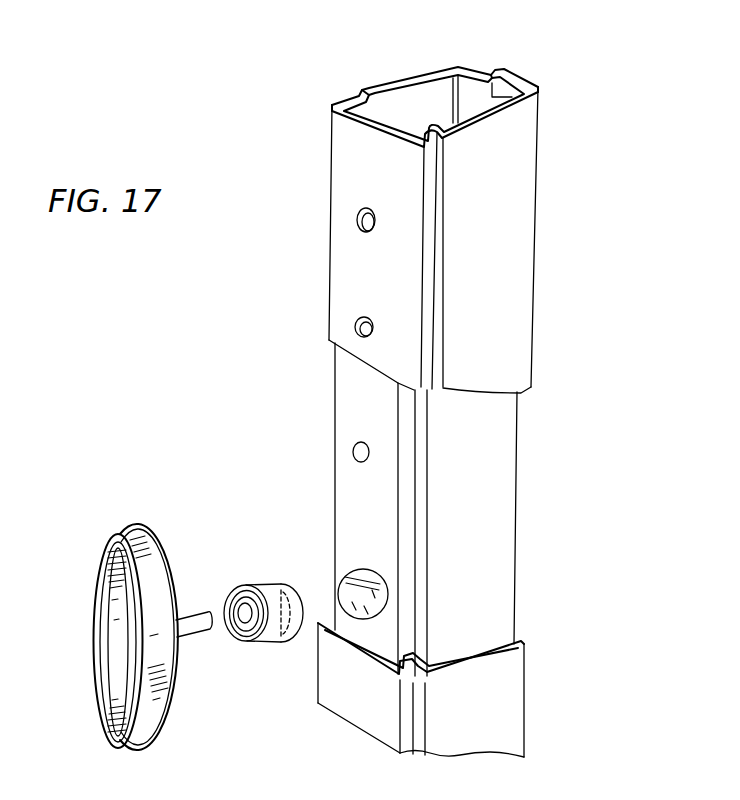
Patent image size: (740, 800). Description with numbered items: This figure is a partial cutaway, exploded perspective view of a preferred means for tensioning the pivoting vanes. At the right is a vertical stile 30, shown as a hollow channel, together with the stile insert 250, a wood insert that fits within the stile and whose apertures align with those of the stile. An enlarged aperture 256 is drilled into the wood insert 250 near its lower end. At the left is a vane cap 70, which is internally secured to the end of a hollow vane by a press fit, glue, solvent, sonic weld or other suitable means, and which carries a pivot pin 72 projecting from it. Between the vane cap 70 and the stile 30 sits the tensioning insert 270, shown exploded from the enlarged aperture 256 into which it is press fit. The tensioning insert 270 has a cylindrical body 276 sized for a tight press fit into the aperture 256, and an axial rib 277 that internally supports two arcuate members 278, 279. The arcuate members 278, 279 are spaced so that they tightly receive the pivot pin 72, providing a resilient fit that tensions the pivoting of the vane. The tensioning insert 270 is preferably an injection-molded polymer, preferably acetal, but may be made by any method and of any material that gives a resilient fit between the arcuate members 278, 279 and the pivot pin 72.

The vertical stile 30 is at (505, 247).
The stile insert 250 is at (437, 98).
The enlarged aperture 256 is at (358, 612).
The vane cap 70 is at (121, 532).
The pivot pin 72 is at (190, 642).
The tensioning insert 270 is at (254, 589).
The cylindrical body 276 is at (283, 583).
The axial rib 277 is at (233, 596).
The arcuate member 278 is at (234, 637).
The arcuate member 279 is at (258, 618).